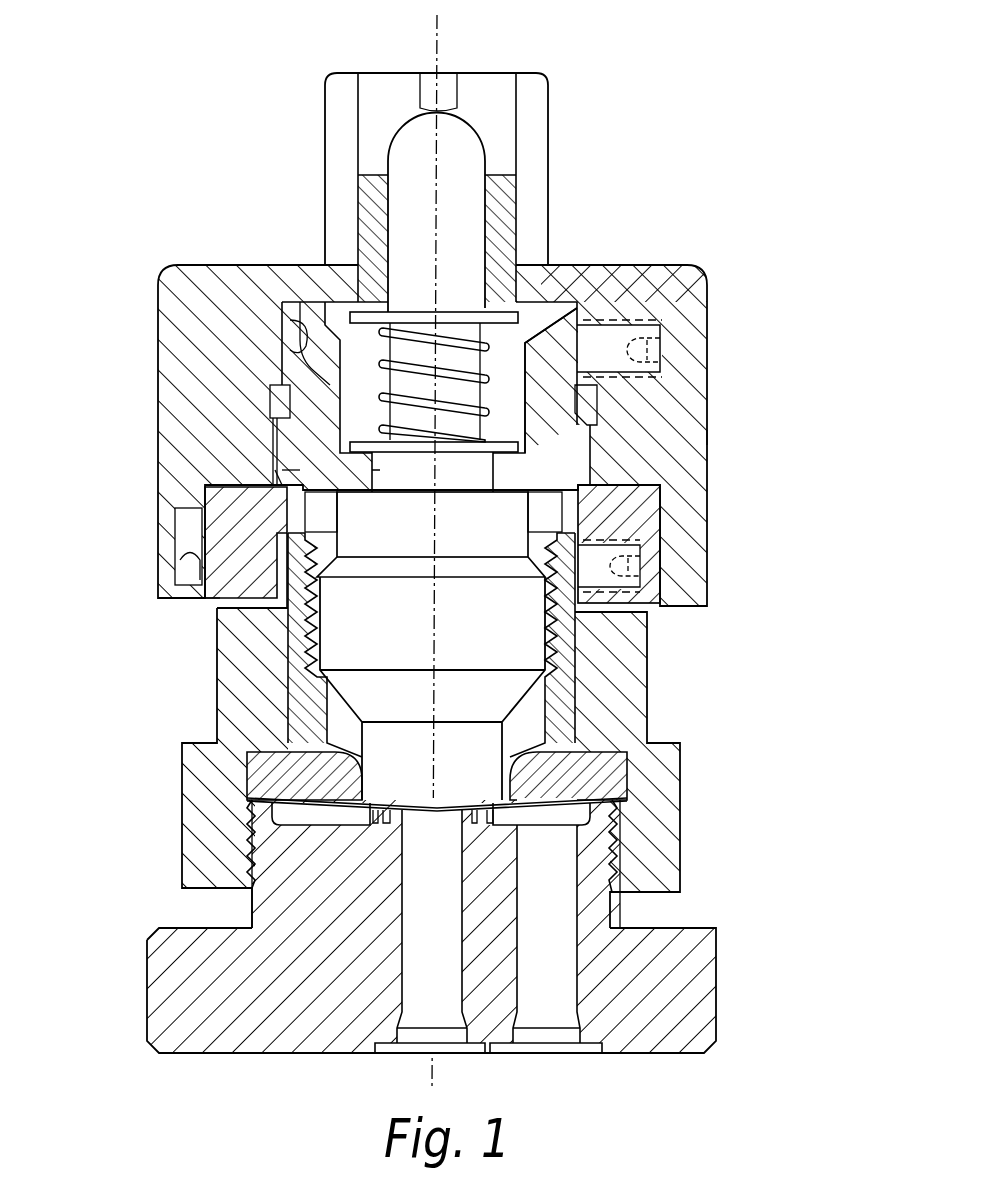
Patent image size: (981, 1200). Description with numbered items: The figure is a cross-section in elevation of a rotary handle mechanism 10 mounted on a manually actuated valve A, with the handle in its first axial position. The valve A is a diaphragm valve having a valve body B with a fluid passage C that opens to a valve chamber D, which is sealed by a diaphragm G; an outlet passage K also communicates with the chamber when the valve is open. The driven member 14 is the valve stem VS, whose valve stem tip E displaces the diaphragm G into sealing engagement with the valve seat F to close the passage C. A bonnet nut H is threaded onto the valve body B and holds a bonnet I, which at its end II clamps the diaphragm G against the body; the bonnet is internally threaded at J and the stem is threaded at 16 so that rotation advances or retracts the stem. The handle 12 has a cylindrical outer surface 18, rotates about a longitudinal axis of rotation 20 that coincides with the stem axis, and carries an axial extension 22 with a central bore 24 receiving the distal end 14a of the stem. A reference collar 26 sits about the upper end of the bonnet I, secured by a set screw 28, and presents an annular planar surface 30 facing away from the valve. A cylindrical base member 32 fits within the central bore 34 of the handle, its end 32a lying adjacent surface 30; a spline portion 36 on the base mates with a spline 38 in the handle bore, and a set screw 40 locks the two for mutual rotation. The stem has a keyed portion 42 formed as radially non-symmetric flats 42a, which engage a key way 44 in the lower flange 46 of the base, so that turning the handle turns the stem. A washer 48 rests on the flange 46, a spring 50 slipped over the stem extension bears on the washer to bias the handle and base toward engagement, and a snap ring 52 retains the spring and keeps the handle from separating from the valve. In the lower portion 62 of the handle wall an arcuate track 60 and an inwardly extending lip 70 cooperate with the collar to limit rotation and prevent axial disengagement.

The rotary handle mechanism 10 is at (795, 435).
The handle 12 is at (232, 262).
The driven member 14 is at (430, 635).
The distal end of the valve stem 14a is at (458, 160).
The valve stem threads 16 is at (560, 690).
The cylindrical outer surface 18 is at (708, 440).
The longitudinal axis of rotation 20 is at (430, 48).
The axial extension 22 is at (555, 120).
The central bore 24 is at (475, 208).
The reference collar 26 is at (240, 540).
The set screw 28 is at (640, 532).
The annular planar surface 30 is at (288, 470).
The base member 32 is at (715, 355).
The end of the base member 32a is at (300, 445).
The central bore 34 is at (298, 335).
The spline portion 36 is at (325, 300).
The spline 38 is at (268, 440).
The set screw 40 is at (620, 340).
The keyed portion 42 is at (333, 412).
The flats 42a is at (433, 475).
The key way 44 is at (445, 478).
The lower flange 46 is at (395, 482).
The washer 48 is at (495, 478).
The spring 50 is at (600, 352).
The snap ring 52 is at (540, 312).
The arcuate track 60 is at (180, 512).
The lower portion of the handle wall 62 is at (188, 576).
The lip 70 is at (205, 600).
The valve A is at (125, 888).
The valve body B is at (720, 990).
The fluid passage C is at (420, 965).
The valve chamber D is at (322, 820).
The valve stem tip E is at (402, 766).
The valve seat F is at (380, 825).
The diaphragm G is at (530, 785).
The bonnet nut H is at (684, 855).
The bonnet I is at (570, 725).
The diaphragm end of the bonnet II is at (300, 780).
The internal threads of the bonnet J is at (283, 640).
The outlet passage K is at (545, 955).
The valve stem VS is at (300, 652).